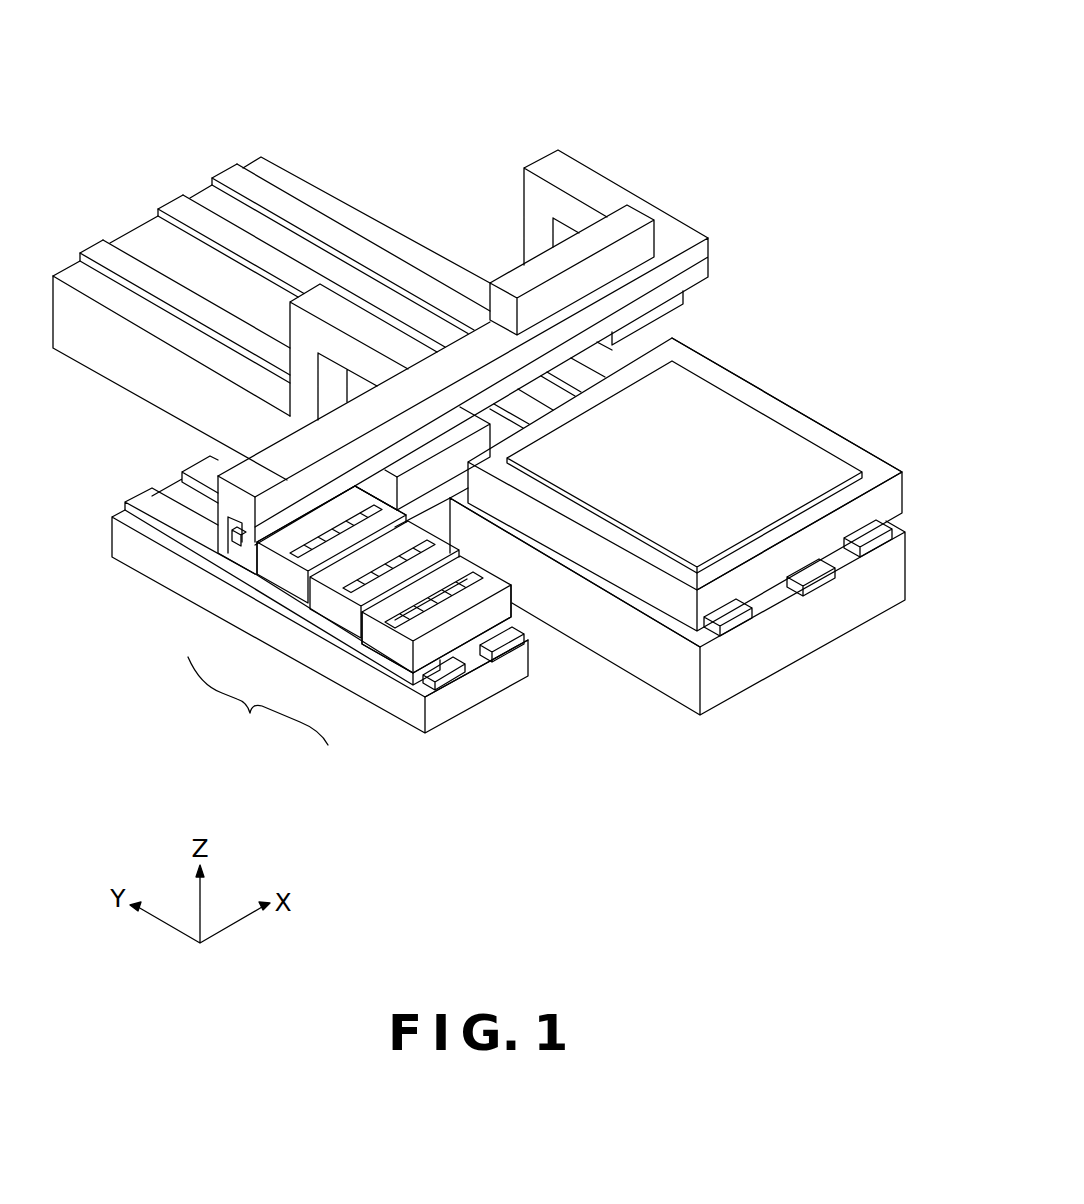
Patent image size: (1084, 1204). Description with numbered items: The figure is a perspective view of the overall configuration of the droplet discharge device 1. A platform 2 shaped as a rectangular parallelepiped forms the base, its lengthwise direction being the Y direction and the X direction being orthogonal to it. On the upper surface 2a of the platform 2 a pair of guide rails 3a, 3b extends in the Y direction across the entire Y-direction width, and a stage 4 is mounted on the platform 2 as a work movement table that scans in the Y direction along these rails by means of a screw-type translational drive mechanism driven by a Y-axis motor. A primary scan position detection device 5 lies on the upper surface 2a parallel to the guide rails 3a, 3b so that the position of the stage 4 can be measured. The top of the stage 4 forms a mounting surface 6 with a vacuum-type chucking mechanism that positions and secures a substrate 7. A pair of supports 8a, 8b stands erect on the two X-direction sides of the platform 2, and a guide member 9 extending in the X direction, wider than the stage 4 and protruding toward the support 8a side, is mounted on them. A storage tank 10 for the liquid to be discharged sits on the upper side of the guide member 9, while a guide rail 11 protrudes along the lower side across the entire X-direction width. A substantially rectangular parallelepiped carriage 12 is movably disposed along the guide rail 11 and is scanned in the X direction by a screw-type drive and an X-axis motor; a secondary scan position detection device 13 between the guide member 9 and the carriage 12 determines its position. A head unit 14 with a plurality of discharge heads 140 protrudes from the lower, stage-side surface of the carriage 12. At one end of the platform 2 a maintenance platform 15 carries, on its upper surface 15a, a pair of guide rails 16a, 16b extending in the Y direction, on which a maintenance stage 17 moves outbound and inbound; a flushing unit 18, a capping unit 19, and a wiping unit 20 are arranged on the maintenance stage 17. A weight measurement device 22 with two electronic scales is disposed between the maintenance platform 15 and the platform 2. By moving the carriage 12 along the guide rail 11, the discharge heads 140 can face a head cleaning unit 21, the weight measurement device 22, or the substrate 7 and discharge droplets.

The droplet discharge device 1 is at (746, 70).
The platform 2 is at (712, 690).
The upper surface of the platform 2a is at (650, 618).
The guide rail 3a is at (748, 620).
The guide rail 3b is at (872, 550).
The stage 4 is at (900, 496).
The primary scan position detection device 5 is at (828, 576).
The mounting surface 6 is at (873, 471).
The substrate 7 is at (815, 465).
The support 8a is at (345, 300).
The support 8b is at (578, 172).
The guide member 9 is at (242, 472).
The storage tank 10 is at (640, 212).
The guide rail 11 is at (233, 536).
The carriage 12 is at (492, 437).
The secondary scan position detection device 13 is at (232, 560).
The head unit 14 is at (211, 403).
The discharge heads 140 is at (352, 497).
The maintenance platform 15 is at (450, 722).
The upper surface of the maintenance platform 15a is at (462, 668).
The guide rail 16a is at (430, 682).
The guide rail 16b is at (500, 652).
The maintenance stage 17 is at (385, 672).
The flushing unit 18 is at (284, 582).
The capping unit 19 is at (333, 612).
The wiping unit 20 is at (385, 632).
The head cleaning unit 21 is at (230, 742).
The weight measurement device 22 is at (440, 530).